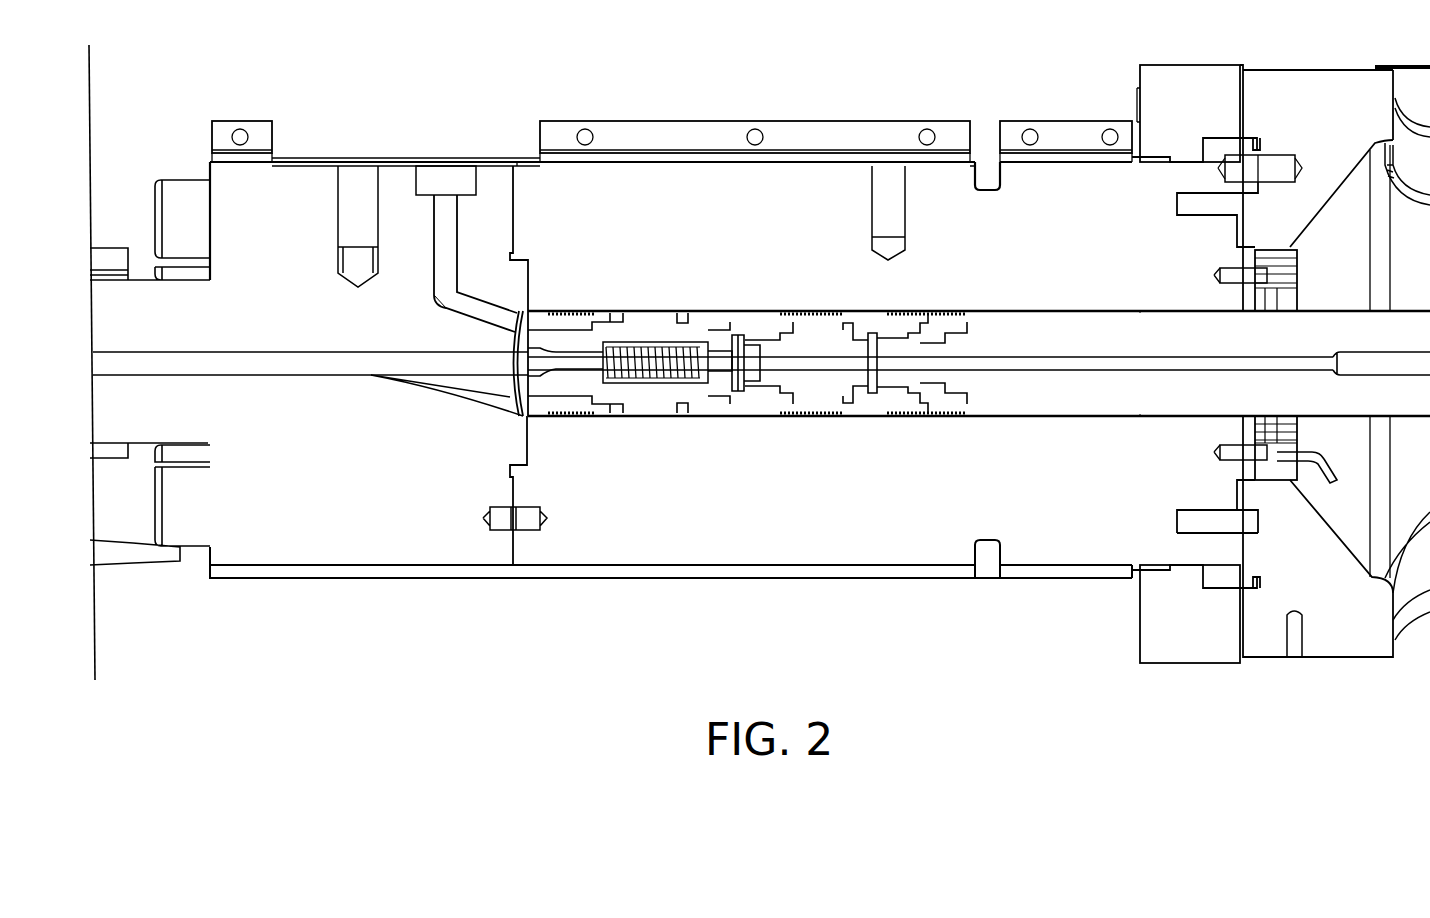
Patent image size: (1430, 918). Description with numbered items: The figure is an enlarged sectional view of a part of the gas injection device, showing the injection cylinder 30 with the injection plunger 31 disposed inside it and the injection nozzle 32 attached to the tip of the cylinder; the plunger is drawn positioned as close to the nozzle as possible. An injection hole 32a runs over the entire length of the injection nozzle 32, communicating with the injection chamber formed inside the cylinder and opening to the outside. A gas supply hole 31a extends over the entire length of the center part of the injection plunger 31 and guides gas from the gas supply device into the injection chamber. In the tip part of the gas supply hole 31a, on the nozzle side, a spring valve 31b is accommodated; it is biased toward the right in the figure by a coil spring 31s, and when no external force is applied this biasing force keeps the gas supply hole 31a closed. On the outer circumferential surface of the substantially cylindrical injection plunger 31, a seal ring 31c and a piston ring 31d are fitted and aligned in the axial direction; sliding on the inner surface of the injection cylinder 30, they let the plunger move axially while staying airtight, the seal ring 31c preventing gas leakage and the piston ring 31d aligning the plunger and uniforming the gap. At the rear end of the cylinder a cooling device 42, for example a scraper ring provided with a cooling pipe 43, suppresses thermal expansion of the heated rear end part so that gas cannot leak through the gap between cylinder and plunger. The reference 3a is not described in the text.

The supply pipe 3a is at (455, 233).
The injection cylinder 30 is at (1040, 185).
The injection plunger 31 is at (988, 397).
The gas supply hole 31a is at (1135, 368).
The spring valve 31b is at (560, 370).
The seal ring 31c is at (615, 420).
The coil spring 31s is at (660, 385).
The piston ring 31d is at (683, 420).
The injection nozzle 32 is at (150, 415).
The injection hole 32a is at (170, 337).
The cooling device 42 is at (1285, 272).
The cooling pipe 43 is at (1275, 457).